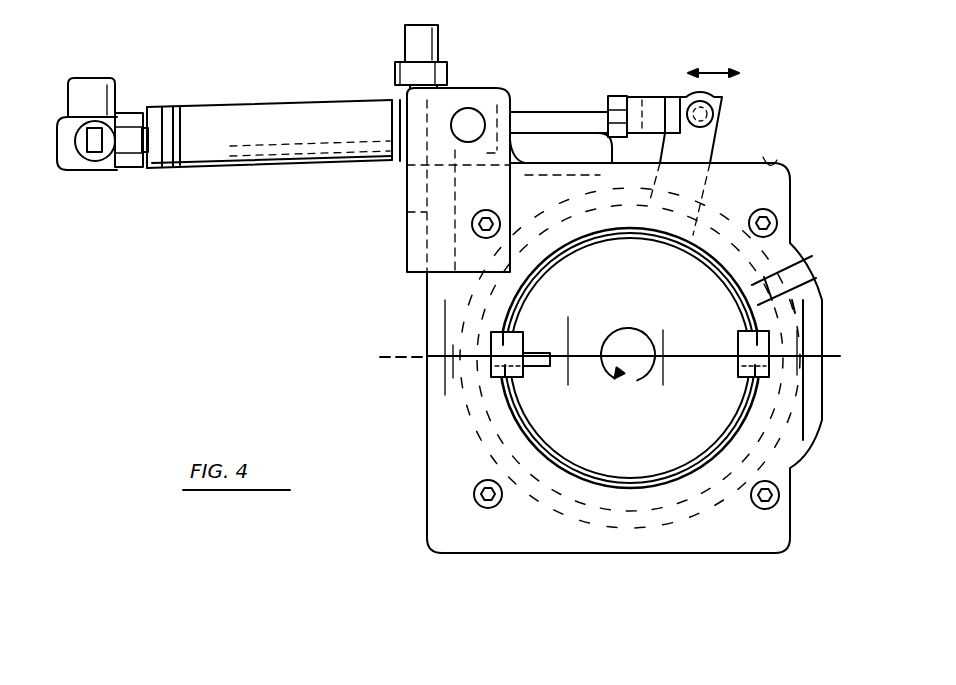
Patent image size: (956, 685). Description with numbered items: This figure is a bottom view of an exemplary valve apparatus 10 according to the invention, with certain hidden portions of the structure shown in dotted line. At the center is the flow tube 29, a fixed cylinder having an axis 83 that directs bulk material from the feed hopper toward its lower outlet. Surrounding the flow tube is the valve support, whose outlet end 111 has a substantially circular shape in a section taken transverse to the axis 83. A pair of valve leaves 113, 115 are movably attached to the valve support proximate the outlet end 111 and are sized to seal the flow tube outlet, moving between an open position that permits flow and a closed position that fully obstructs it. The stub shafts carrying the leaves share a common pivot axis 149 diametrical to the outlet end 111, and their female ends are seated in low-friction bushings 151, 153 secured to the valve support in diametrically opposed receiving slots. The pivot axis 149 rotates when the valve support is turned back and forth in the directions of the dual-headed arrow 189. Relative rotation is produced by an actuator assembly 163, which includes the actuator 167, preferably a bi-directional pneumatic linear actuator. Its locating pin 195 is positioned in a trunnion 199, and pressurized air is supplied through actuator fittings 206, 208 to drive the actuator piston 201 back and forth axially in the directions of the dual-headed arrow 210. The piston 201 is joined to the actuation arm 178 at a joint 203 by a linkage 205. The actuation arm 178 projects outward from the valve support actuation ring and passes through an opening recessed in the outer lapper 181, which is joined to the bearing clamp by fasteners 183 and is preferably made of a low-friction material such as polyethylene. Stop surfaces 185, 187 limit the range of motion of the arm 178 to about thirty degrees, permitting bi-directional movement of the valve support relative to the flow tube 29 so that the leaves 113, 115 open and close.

The assembly 10 is at (232, 284).
The flow tube 29 is at (815, 283).
The axis 83 is at (638, 360).
The outlet end 111 is at (807, 258).
The valve leaf 113 is at (645, 460).
The valve leaf 115 is at (642, 295).
The pivot axis 149 is at (392, 356).
The bushing 151 is at (768, 332).
The bushing 153 is at (490, 364).
The actuator assembly 163 is at (232, 58).
The actuator 167 is at (320, 100).
The actuation arm 178 is at (716, 148).
The outer lapper 181 is at (800, 418).
The fasteners 183 is at (470, 228).
The stop surface 185 is at (605, 185).
The stop surface 187 is at (777, 160).
The dual-headed arrow 189 is at (640, 332).
The locating pin 195 is at (464, 125).
The trunnion 199 is at (408, 212).
The actuator piston 201 is at (555, 118).
The joint 203 is at (703, 114).
The linkage 205 is at (643, 118).
The actuator fitting 206 is at (405, 35).
The actuator fitting 208 is at (118, 84).
The dual-headed arrow 210 is at (718, 70).